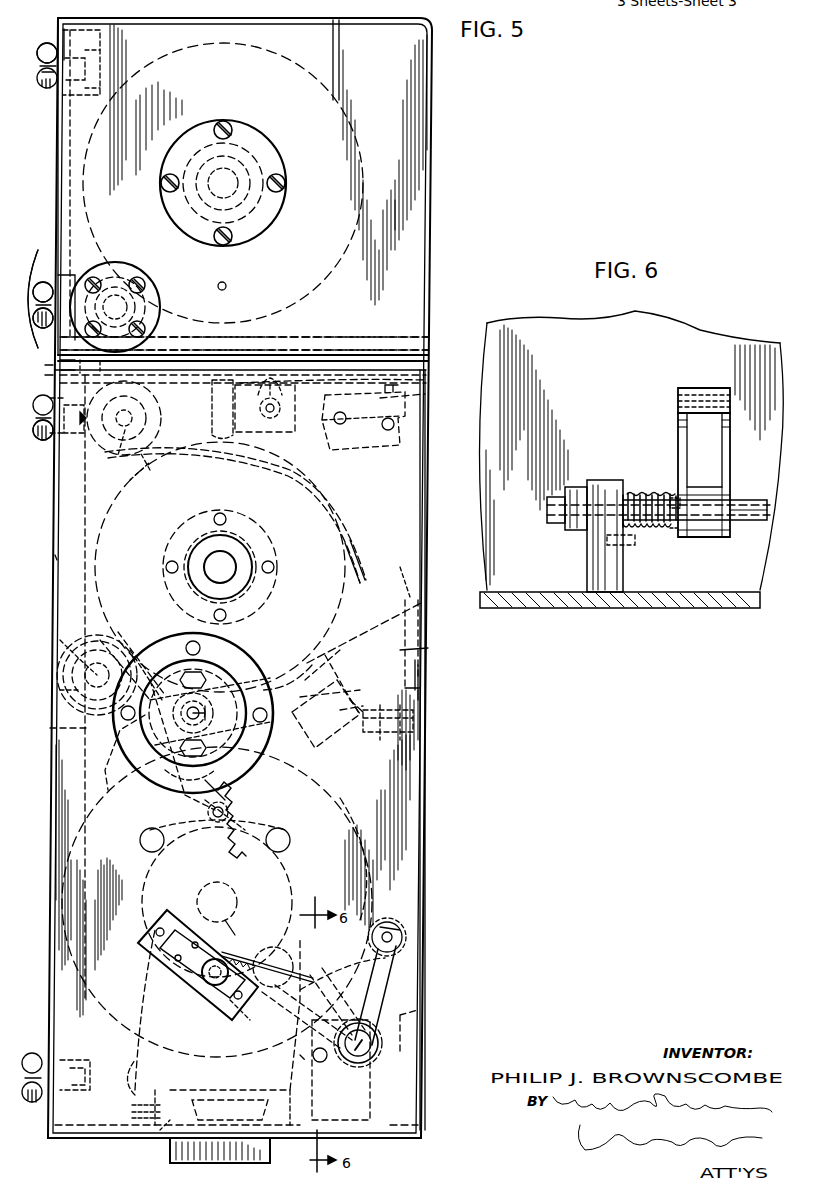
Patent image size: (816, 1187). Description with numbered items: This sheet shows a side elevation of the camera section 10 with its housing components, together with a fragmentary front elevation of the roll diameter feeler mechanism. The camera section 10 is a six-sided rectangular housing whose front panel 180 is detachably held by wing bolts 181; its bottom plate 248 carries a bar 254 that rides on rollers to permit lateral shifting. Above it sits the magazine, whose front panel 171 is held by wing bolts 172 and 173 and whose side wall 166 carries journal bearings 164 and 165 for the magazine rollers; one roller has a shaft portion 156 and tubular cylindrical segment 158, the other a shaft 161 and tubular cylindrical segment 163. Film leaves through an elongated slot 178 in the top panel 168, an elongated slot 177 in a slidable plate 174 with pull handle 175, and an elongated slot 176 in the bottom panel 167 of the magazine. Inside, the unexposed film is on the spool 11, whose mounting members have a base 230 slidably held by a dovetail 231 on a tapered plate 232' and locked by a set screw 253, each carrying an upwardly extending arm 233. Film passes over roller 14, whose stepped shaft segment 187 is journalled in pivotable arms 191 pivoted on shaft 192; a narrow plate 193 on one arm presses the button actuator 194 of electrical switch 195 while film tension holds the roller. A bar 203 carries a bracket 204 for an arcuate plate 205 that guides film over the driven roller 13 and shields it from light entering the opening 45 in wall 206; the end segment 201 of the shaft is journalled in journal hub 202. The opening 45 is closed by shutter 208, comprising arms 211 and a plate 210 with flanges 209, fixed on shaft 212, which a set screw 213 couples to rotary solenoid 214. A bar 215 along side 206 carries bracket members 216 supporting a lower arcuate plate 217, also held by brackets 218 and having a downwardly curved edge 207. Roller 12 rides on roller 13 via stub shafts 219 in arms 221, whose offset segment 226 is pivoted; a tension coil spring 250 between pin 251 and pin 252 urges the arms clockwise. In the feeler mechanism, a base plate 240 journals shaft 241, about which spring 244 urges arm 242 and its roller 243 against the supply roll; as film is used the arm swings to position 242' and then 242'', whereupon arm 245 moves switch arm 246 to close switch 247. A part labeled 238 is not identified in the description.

In FIG. 5, the camera section 10 is at (46, 561).
In FIG. 5, the spool 11 is at (357, 798).
In FIG. 5, the roller 12 is at (62, 645).
In FIG. 5, the roller 13 is at (237, 481).
In FIG. 5, the roller 14 is at (131, 401).
In FIG. 5, the opening 45 is at (426, 654).
In FIG. 5, the shaft portion 156 is at (236, 180).
In FIG. 5, the tubular cylindrical segment 158 is at (258, 176).
In FIG. 5, the shaft 161 is at (118, 292).
In FIG. 5, the tubular cylindrical segment 163 is at (136, 290).
In FIG. 5, the journal bearing 164 is at (275, 207).
In FIG. 5, the journal bearing 165 is at (150, 303).
In FIG. 5, the side wall 166 is at (386, 69).
In FIG. 5, the bottom panel 167 is at (352, 345).
In FIG. 5, the top panel 168 is at (225, 362).
In FIG. 5, the front panel 171 is at (60, 150).
In FIG. 5, the wing bolt 172 is at (47, 45).
In FIG. 5, the wing bolt 173 is at (42, 284).
In FIG. 5, the plate 174 is at (296, 353).
In FIG. 5, the pull handle 175 is at (27, 262).
In FIG. 5, the elongated slot 176 is at (56, 348).
In FIG. 5, the elongated slot 177 is at (150, 345).
In FIG. 5, the elongated slot 178 is at (56, 365).
In FIG. 5, the front panel 180 is at (58, 665).
In FIG. 5, the wing bolts 181 is at (45, 440).
In FIG. 5, the stepped shaft segment 187 is at (111, 454).
In FIG. 5, the pivotable arms 191 is at (158, 455).
In FIG. 5, the shaft 192 is at (283, 407).
In FIG. 5, the narrow plate 193 is at (428, 379).
In FIG. 5, the button actuator 194 is at (426, 403).
In FIG. 5, the electrical switch 195 is at (375, 415).
In FIG. 5, the end segment 201 is at (240, 560).
In FIG. 5, the journal hub 202 is at (244, 543).
In FIG. 5, the bar 203 is at (216, 401).
In FIG. 5, the bracket 204 is at (218, 417).
In FIG. 5, the arcuate plate 205 is at (312, 468).
In FIG. 5, the wall 206 is at (422, 500).
In FIG. 5, the downwardly curved edge 207 is at (128, 640).
In FIG. 5, the shutter 208 is at (385, 602).
In FIG. 5, the tabs or flanges 209 is at (396, 573).
In FIG. 5, the plate 210 is at (402, 633).
In FIG. 5, the arms 211 is at (383, 687).
In FIG. 5, the shaft 212 is at (238, 672).
In FIG. 5, the set screw 213 is at (236, 657).
In FIG. 5, the rotary solenoid 214 is at (160, 652).
In FIG. 5, the bar 215 is at (422, 722).
In FIG. 5, the bracket members 216 is at (368, 709).
In FIG. 5, the arcuate plate 217 is at (300, 650).
In FIG. 5, the brackets 218 is at (327, 736).
In FIG. 5, the stub shafts 219 is at (60, 700).
In FIG. 5, the arms 221 is at (64, 728).
In FIG. 5, the segment 226 is at (165, 802).
In FIG. 5, the base 230 is at (218, 1094).
In FIG. 5, the dovetail 231 is at (187, 1092).
In FIG. 5, the tapered plate 232' is at (141, 1139).
In FIG. 5, the upwardly extending arm 233 is at (171, 965).
In FIG. 5, the lower panel 238 is at (334, 861).
In FIG. 5, the base plate 240 is at (422, 1060).
In FIG. 6, the base plate 240 is at (610, 580).
In FIG. 5, the shaft 241 is at (380, 1043).
In FIG. 6, the shaft 241 is at (555, 512).
In FIG. 5, the arm 242 is at (383, 981).
In FIG. 6, the arm 242 is at (721, 475).
In FIG. 5, the arm position 242' is at (309, 991).
In FIG. 5, the arm position 242'' is at (291, 1016).
In FIG. 5, the roller 243 is at (400, 930).
In FIG. 6, the roller 243 is at (706, 388).
In FIG. 6, the spring 244 is at (648, 495).
In FIG. 5, the arm 245 is at (372, 1008).
In FIG. 5, the switch arm 246 is at (307, 975).
In FIG. 5, the switch 247 is at (186, 992).
In FIG. 5, the bottom plate 248 is at (102, 1137).
In FIG. 5, the tension coil spring 250 is at (252, 810).
In FIG. 5, the pin 251 is at (283, 828).
In FIG. 5, the pin 252 is at (155, 780).
In FIG. 5, the set screw 253 is at (133, 1110).
In FIG. 5, the bar 254 is at (258, 1151).